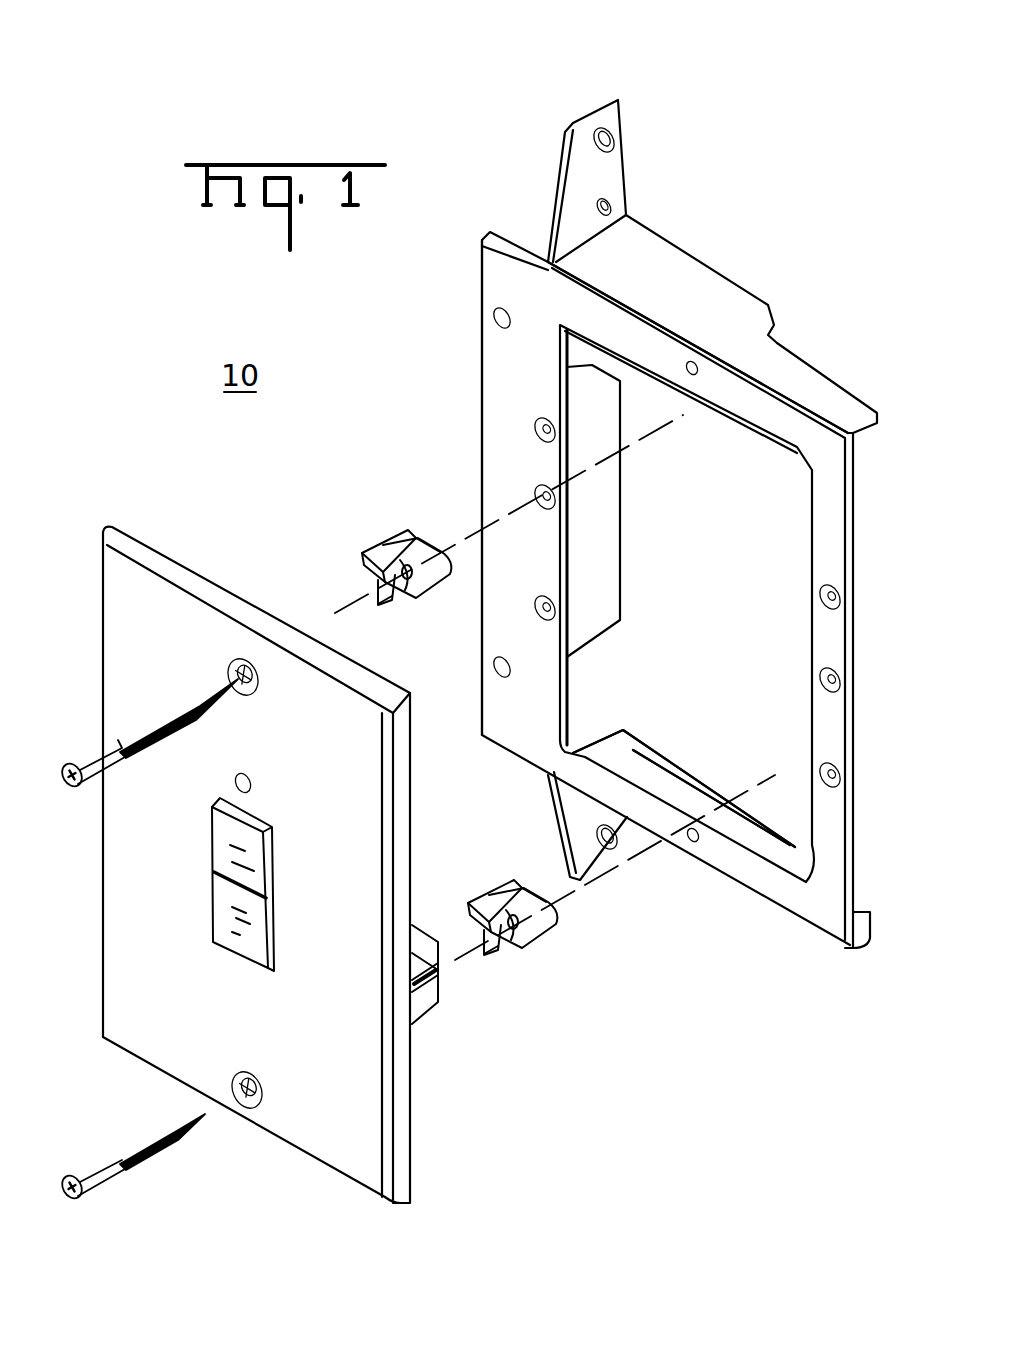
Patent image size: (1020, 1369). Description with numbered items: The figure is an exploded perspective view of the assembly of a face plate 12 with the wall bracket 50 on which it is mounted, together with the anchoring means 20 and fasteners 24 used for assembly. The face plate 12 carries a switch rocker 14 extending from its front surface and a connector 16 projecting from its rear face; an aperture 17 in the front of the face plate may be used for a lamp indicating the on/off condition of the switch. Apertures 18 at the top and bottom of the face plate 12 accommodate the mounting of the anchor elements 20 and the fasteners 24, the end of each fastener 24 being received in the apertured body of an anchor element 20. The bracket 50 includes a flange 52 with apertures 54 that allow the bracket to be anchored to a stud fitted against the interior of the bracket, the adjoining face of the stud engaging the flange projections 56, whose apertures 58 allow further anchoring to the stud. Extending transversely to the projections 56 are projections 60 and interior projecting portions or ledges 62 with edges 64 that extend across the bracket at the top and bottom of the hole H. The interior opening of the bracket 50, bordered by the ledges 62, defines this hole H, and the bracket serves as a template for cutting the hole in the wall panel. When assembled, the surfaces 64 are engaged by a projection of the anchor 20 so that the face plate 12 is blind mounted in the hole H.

The face plate 12 is at (200, 577).
The switch rocker 14 is at (222, 841).
The connector 16 is at (432, 1010).
The aperture 17 is at (252, 788).
The aperture 18 is at (254, 684).
The anchoring means 20 is at (398, 530).
The fasteners 24 is at (100, 750).
The bracket 50 is at (795, 352).
The flange 52 is at (500, 252).
The apertures 54 is at (494, 318).
The flange projections 56 is at (582, 130).
The apertures 58 is at (608, 205).
The projections 60 is at (693, 268).
The ledges 62 is at (745, 817).
The edges 64 is at (690, 781).
The hole H is at (810, 540).